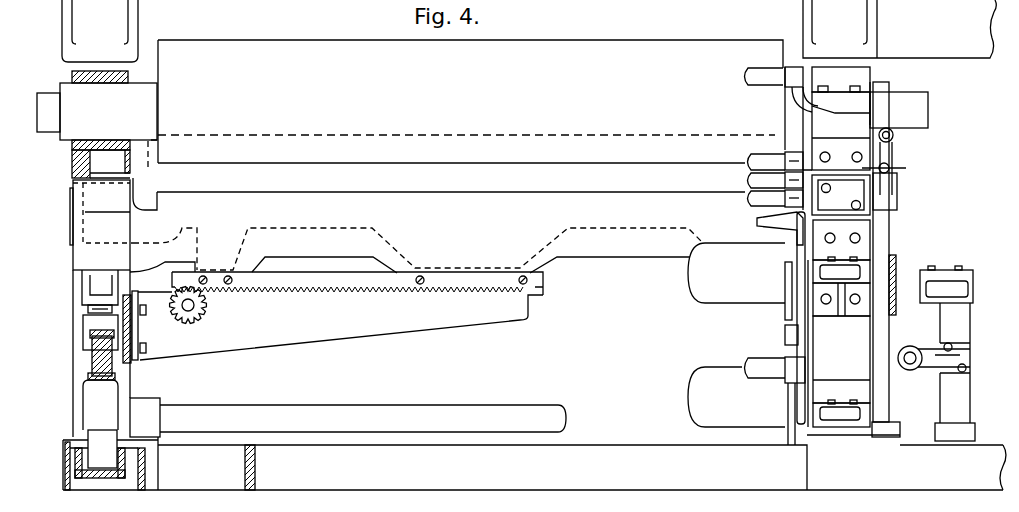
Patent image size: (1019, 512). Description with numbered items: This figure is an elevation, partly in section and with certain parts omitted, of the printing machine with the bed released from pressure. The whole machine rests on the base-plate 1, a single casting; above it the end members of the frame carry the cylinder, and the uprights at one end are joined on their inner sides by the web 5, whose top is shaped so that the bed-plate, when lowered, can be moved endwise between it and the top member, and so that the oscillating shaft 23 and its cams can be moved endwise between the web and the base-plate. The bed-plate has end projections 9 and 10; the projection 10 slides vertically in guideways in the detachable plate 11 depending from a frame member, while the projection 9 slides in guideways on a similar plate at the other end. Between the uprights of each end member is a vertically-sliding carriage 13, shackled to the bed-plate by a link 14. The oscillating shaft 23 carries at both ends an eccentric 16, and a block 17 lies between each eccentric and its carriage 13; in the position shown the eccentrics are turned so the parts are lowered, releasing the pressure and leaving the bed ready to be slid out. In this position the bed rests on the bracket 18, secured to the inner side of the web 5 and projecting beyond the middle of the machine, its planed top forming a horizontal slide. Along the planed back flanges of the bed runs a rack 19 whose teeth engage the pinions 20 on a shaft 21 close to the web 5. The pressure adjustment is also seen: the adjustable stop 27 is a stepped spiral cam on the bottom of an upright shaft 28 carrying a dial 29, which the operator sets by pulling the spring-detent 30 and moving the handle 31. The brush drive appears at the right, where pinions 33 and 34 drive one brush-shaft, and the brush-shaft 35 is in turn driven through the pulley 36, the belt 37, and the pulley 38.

The base-plate 1 is at (534, 462).
The web 5 is at (132, 365).
The end projection 9 is at (103, 225).
The end projection 10 is at (780, 232).
The detachable plate 11 is at (70, 203).
The vertically-sliding carriage 13 is at (92, 363).
The link 14 is at (88, 311).
The eccentric 16 is at (102, 449).
The block 17 is at (100, 405).
The bracket 18 is at (337, 325).
The rack 19 is at (357, 283).
The pinion 20 is at (204, 310).
The shaft 21 is at (188, 312).
The oscillating shaft 23 is at (363, 418).
The adjustable stop 27 is at (883, 437).
The upright shaft 28 is at (889, 335).
The dial 29 is at (889, 165).
The spring-detent 30 is at (897, 183).
The handle 31 is at (893, 135).
The pinion 33 is at (864, 279).
The pinion 34 is at (886, 278).
The brush-shaft 35 is at (870, 393).
The pulley 36 is at (815, 253).
The belt 37 is at (808, 316).
The pulley 38 is at (805, 372).